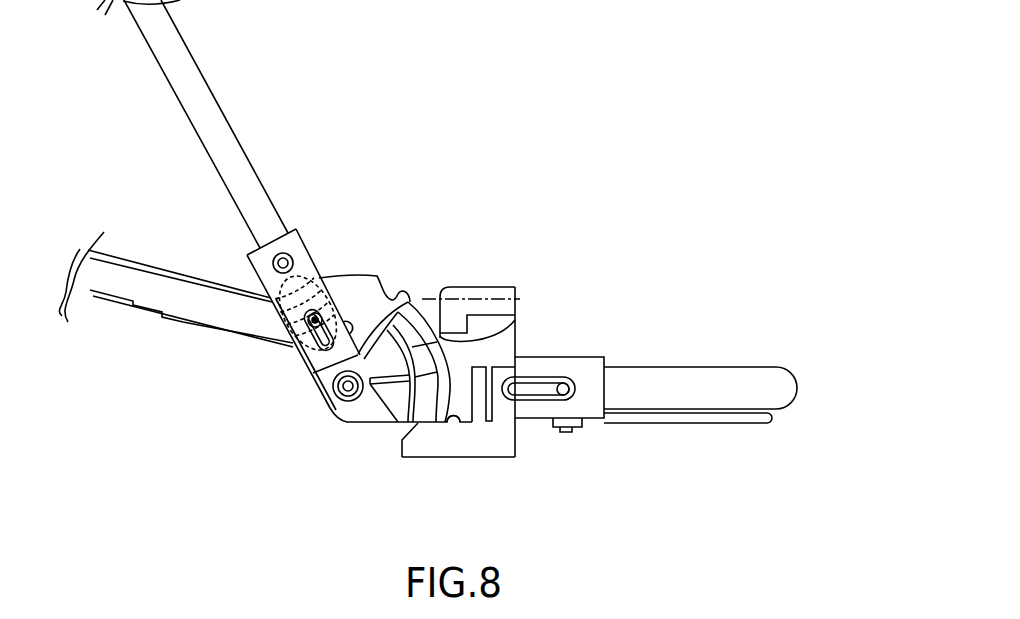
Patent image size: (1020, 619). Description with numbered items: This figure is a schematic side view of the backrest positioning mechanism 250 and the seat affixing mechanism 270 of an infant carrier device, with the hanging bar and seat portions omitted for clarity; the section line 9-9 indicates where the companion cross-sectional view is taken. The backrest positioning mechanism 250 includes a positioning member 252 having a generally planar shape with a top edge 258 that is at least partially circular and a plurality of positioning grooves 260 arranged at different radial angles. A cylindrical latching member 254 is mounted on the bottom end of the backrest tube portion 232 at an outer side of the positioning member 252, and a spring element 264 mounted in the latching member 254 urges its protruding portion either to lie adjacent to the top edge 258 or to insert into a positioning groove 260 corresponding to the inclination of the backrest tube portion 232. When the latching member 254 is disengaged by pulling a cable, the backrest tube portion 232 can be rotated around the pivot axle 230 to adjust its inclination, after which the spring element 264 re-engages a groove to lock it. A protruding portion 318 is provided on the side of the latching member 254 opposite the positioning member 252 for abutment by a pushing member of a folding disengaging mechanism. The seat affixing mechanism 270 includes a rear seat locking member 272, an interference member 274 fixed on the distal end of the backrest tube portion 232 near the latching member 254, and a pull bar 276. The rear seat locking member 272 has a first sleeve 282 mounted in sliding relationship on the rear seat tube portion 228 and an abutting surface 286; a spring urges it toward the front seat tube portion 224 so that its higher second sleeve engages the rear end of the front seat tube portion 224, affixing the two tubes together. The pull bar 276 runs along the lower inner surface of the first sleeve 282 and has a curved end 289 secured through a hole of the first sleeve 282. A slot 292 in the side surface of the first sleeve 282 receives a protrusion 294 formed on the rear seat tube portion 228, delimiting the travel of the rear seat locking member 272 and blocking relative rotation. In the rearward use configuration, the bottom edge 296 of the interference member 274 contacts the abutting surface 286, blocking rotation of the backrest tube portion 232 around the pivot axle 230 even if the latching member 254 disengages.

The section line 9- 9 is at (522, 297).
The front seat tube portion 224 is at (222, 325).
The rear seat tube portion 228 is at (730, 383).
The pivot axle 230 is at (333, 408).
The backrest tube portion 232 is at (201, 117).
The backrest positioning mechanism 250 is at (282, 397).
The positioning member 252 is at (326, 288).
The latching member 254 is at (249, 263).
The top edge 258 is at (356, 272).
The positioning grooves 260 is at (395, 272).
The spring element 264 is at (304, 250).
The seat affixing mechanism 270 is at (605, 226).
The rear seat locking member 272 is at (491, 457).
The interference member 274 is at (360, 422).
The pull bar 276 is at (715, 413).
The first sleeve 282 is at (577, 357).
The abutting surface 286 is at (450, 422).
The curved end 289 is at (567, 432).
The slot 292 is at (540, 380).
The protrusion 294 is at (568, 386).
The bottom edge 296 is at (384, 422).
The protruding portion 318 is at (273, 215).